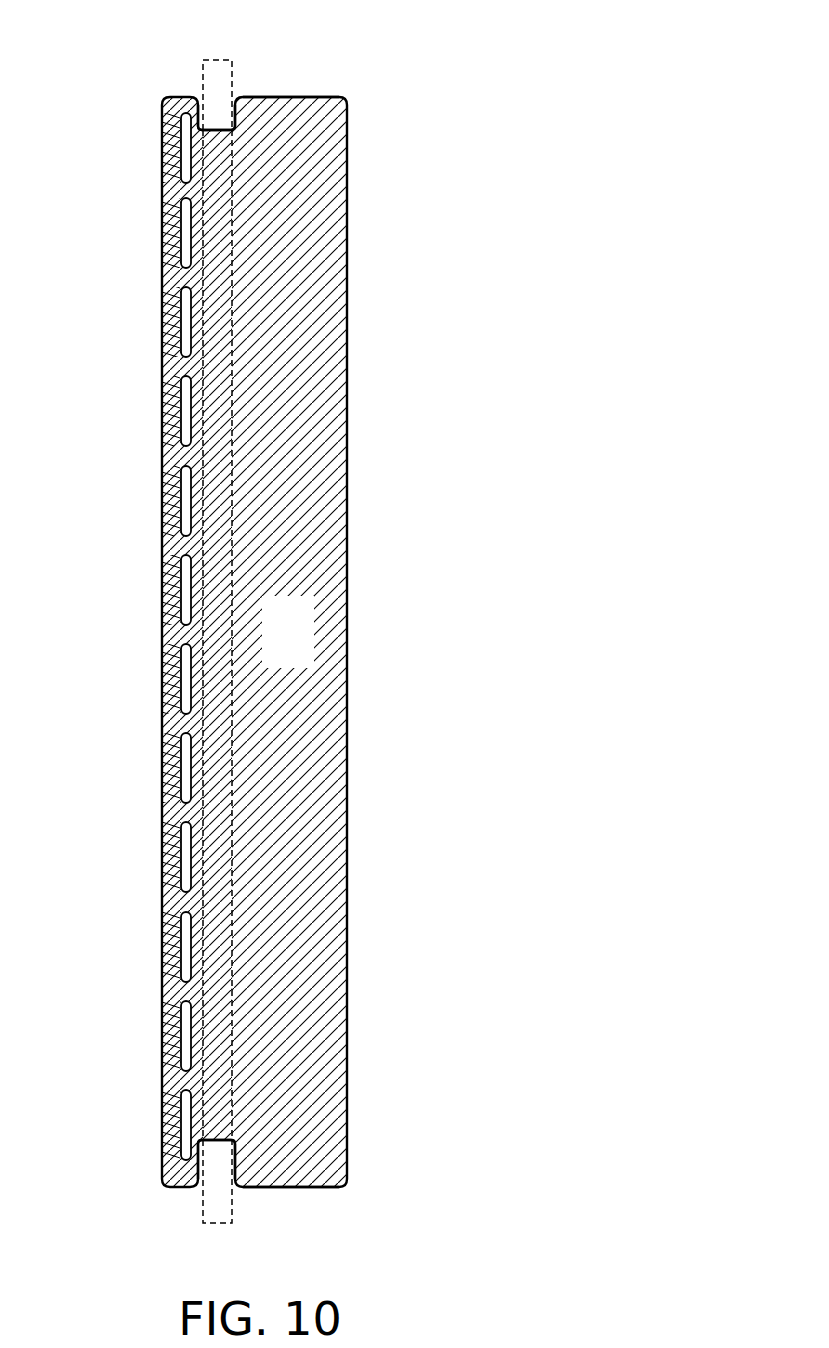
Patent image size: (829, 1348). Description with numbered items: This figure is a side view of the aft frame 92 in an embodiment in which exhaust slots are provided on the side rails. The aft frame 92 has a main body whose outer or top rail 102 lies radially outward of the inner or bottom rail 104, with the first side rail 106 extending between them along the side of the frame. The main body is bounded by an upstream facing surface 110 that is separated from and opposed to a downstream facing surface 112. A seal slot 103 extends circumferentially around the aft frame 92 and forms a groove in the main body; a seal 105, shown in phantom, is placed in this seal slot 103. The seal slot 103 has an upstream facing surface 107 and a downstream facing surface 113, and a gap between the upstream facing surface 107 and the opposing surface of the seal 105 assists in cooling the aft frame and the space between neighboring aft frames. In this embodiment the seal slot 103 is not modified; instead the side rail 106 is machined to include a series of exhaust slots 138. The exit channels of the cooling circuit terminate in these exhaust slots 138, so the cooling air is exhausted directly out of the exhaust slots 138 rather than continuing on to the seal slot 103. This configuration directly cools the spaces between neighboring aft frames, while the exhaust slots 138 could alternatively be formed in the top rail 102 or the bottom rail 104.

The aft frame 92 is at (355, 50).
The outer rail 102 is at (288, 97).
The seal slot 103 is at (217, 1145).
The inner rail 104 is at (303, 1188).
The seal 105 is at (202, 68).
The first side rail 106 is at (320, 642).
The upstream facing surface of the seal slot 107 is at (202, 113).
The upstream facing surface 110 is at (348, 290).
The downstream facing surface 112 is at (162, 540).
The downstream facing surface of the seal slot 113 is at (242, 1160).
The exhaust slots 138 is at (185, 323).